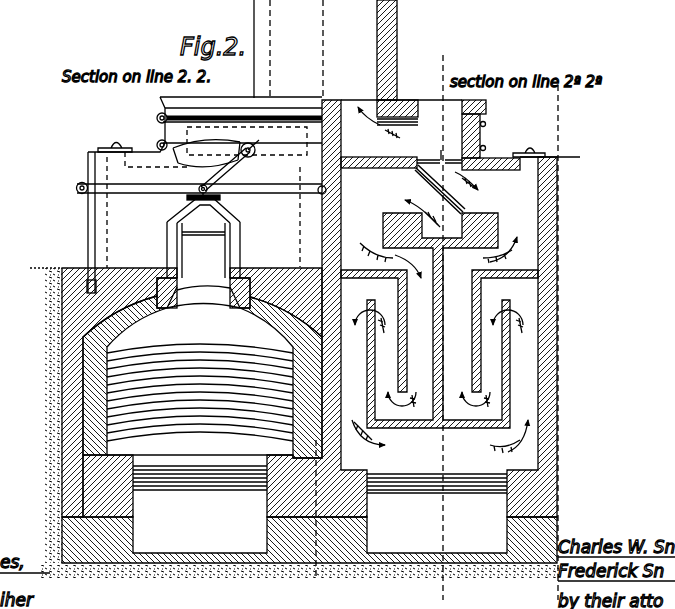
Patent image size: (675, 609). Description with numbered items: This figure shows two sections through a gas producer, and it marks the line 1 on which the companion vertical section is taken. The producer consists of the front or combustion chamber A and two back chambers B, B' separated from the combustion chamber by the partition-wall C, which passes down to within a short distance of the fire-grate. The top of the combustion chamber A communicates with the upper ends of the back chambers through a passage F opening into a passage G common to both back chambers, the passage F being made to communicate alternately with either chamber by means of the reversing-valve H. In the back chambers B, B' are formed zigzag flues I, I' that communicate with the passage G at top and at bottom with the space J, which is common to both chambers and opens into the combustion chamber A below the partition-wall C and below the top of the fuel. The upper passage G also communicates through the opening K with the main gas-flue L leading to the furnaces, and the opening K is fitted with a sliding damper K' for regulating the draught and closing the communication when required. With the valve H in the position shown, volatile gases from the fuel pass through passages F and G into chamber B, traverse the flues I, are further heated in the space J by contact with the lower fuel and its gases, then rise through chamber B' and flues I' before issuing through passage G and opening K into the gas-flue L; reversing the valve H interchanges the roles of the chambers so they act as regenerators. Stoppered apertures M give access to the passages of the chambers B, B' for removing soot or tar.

The section line 1 1 is at (434, 320).
The main gas-flue L is at (377, 62).
The stoppered apertures M is at (321, 140).
The combustion chamber A is at (202, 368).
The partition-wall C is at (200, 392).
The space J is at (320, 464).
The passage F is at (203, 235).
The passage G is at (419, 163).
The opening K is at (391, 156).
The sliding damper K' is at (512, 157).
The reversing-valve H is at (446, 189).
The back chamber B is at (435, 320).
The back chamber B' is at (505, 314).
The zigzag flues I is at (379, 357).
The zigzag flues I' is at (489, 381).